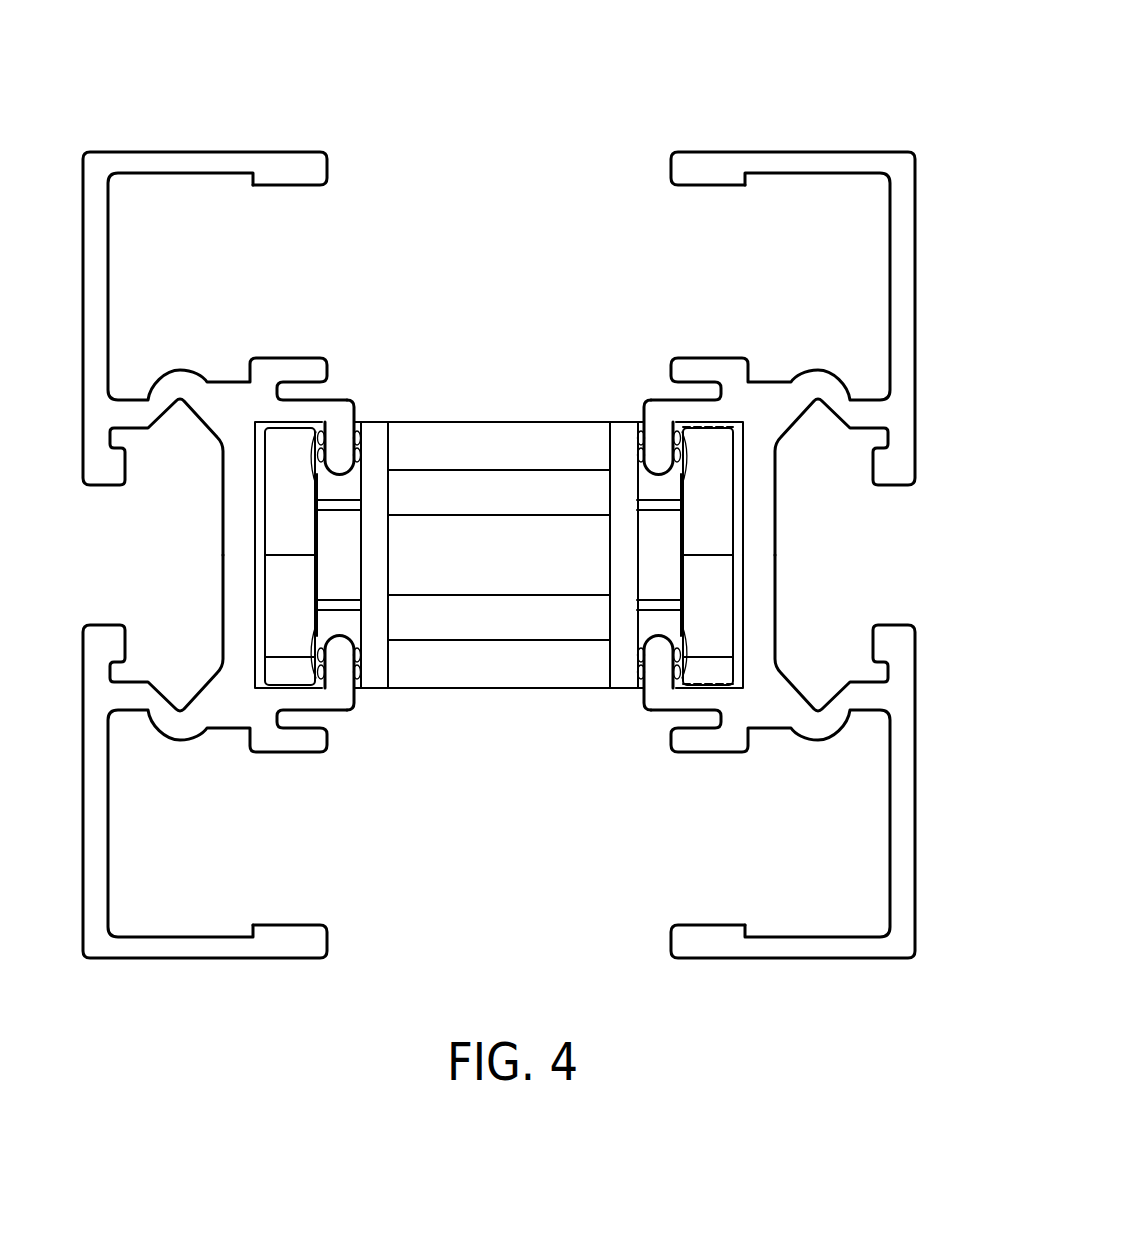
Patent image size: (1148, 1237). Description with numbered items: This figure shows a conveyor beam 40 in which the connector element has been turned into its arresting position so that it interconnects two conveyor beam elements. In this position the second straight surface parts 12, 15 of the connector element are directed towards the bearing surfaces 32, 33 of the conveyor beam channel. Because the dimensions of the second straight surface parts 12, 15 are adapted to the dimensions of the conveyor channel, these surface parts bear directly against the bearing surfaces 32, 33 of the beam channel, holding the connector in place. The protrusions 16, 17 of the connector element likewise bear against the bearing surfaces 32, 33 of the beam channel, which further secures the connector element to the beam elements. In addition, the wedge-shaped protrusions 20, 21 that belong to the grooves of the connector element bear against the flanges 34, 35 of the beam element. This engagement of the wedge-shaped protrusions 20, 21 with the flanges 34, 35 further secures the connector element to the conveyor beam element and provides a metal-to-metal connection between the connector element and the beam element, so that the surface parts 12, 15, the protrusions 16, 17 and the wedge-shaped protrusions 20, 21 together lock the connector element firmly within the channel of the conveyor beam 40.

The conveyor beam 40 is at (594, 106).
The second straight surface part 12 is at (712, 435).
The second straight surface part 15 is at (710, 685).
The protrusion 16 is at (694, 422).
The protrusion 17 is at (682, 694).
The wedge-shaped protrusion 20 is at (640, 645).
The wedge-shaped protrusion 21 is at (678, 662).
The bearing surface 32 is at (714, 422).
The bearing surface 33 is at (724, 686).
The flange 34 is at (653, 456).
The flange 35 is at (650, 663).